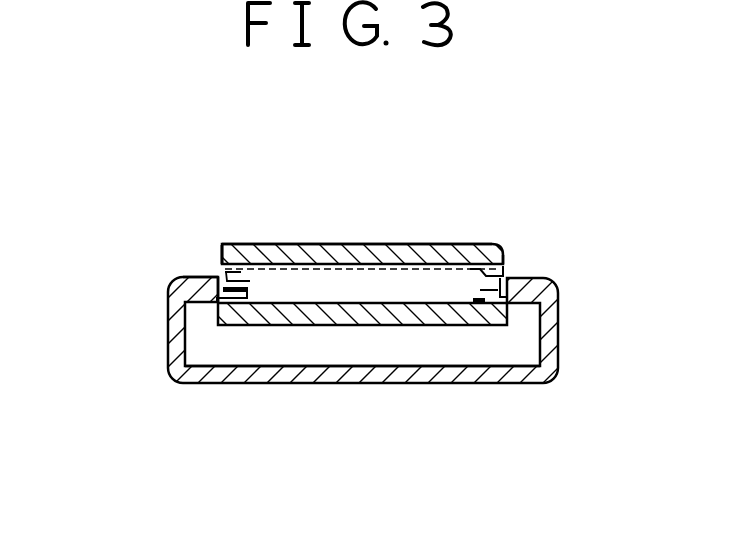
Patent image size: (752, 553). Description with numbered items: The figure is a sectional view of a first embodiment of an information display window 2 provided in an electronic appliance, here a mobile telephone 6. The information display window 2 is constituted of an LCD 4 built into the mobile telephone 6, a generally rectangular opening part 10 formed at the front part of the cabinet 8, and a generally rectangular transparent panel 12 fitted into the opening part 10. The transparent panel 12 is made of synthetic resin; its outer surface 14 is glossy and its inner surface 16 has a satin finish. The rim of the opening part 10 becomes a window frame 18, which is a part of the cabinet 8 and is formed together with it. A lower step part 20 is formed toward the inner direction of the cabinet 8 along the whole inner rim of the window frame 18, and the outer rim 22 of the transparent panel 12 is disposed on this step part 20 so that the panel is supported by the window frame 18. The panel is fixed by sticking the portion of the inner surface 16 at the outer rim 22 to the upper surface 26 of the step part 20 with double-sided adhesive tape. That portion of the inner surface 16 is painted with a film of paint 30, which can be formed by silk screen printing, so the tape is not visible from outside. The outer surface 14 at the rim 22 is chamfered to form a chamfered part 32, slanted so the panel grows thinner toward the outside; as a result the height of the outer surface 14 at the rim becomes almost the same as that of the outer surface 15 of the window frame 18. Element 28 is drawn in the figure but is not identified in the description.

The information display window 2 is at (241, 202).
The LCD 4 is at (340, 317).
The mobile telephone 6 is at (133, 251).
The cabinet 8 is at (558, 311).
The opening part 10 is at (262, 297).
The transparent panel 12 is at (377, 250).
The outer surface 14 is at (330, 243).
The outer surface of window frame 15 is at (176, 280).
The inner surface 16 is at (398, 270).
The window frame 18 is at (222, 277).
The step part 20 is at (447, 327).
The outer rim 22 is at (490, 226).
The upper surface 26 is at (500, 290).
The insulating spacer 28 is at (248, 288).
The film of paint 30 is at (450, 243).
The chamfered part 32 is at (240, 246).